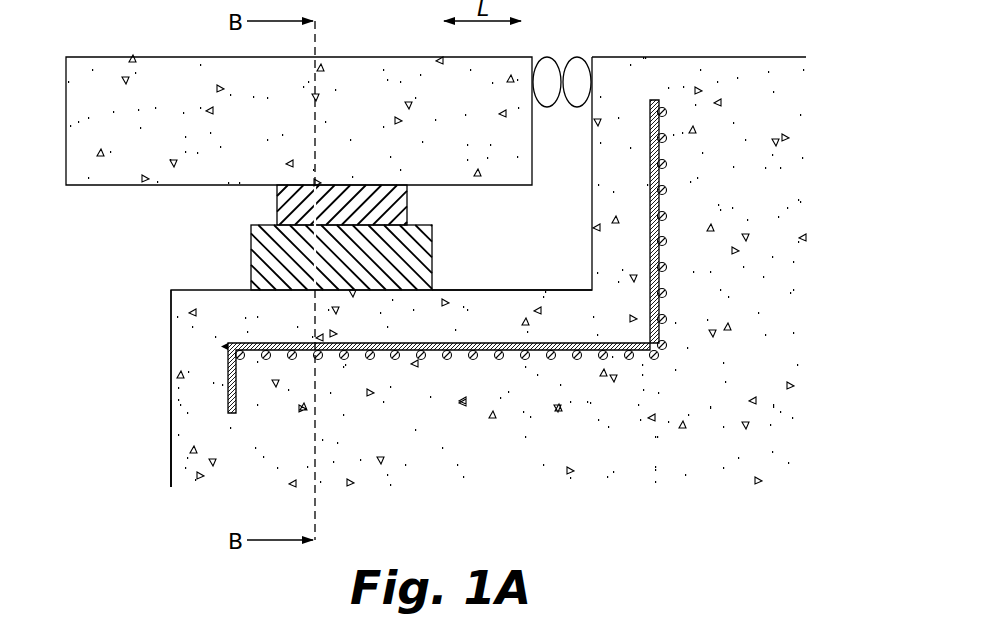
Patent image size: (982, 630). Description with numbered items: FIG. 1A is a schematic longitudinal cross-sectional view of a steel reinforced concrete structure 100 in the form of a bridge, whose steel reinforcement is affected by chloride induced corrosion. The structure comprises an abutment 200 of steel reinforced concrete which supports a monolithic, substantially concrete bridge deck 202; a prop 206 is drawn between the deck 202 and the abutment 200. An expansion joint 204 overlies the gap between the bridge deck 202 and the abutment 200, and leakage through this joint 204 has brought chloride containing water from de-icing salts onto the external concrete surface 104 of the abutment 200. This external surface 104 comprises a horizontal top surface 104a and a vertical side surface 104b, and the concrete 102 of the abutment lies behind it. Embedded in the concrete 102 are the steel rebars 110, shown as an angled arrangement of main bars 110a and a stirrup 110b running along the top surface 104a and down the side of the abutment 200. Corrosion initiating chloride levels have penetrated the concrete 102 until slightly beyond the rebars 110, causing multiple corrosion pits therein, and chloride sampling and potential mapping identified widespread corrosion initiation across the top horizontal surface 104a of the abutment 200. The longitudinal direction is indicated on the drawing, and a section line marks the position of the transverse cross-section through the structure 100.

The steel reinforced concrete structure 100 is at (115, 358).
The concrete 102 is at (673, 407).
The external surface of structure 104 is at (168, 301).
The horizontal top surface of structure 104a is at (490, 288).
The vertical side surface of structure 104b is at (168, 476).
The steel reinforcement/rebars 110 is at (541, 316).
The main bar 110a is at (428, 360).
The stirrup 110b is at (382, 360).
The abutment 200 is at (760, 103).
The bridge or road deck 202 is at (140, 147).
The expansion joint 204 is at (567, 54).
The prop 206 is at (288, 205).